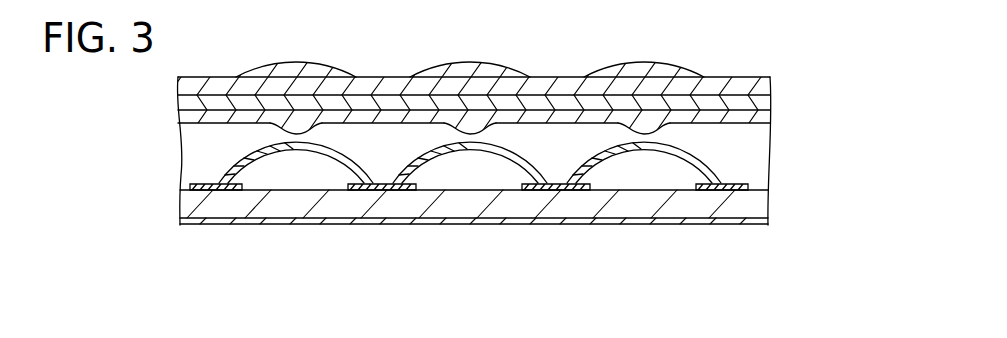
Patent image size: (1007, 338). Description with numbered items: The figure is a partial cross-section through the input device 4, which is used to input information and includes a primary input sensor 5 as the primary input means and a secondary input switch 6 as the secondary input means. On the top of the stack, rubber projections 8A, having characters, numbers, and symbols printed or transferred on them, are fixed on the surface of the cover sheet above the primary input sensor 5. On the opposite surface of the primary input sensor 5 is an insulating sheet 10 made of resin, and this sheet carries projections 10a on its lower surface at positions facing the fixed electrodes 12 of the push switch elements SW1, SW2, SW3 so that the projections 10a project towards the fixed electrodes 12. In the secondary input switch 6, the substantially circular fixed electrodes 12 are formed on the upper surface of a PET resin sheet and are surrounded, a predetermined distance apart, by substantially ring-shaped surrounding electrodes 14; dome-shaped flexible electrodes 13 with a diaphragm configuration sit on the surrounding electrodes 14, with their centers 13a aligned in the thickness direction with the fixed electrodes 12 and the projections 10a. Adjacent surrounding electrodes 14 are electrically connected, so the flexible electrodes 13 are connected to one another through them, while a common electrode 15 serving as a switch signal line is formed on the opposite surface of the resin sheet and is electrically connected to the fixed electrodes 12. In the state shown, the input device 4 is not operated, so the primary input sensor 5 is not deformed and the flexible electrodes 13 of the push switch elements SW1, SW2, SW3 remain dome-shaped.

The input device 4 is at (773, 88).
The primary input sensor 5 is at (773, 102).
The insulating sheet 10 is at (773, 118).
The projections 10a is at (305, 128).
The rubber projections 8A is at (298, 68).
The secondary input switch 6 is at (742, 172).
The flexible electrodes 13 is at (252, 155).
The centers of the flexible electrodes 13a is at (333, 187).
The surrounding electrodes 14 is at (213, 191).
The fixed electrodes 12 is at (294, 191).
The common electrode 15 is at (452, 225).
The push switch element SW1 is at (296, 150).
The push switch element SW2 is at (470, 150).
The push switch element SW3 is at (644, 150).